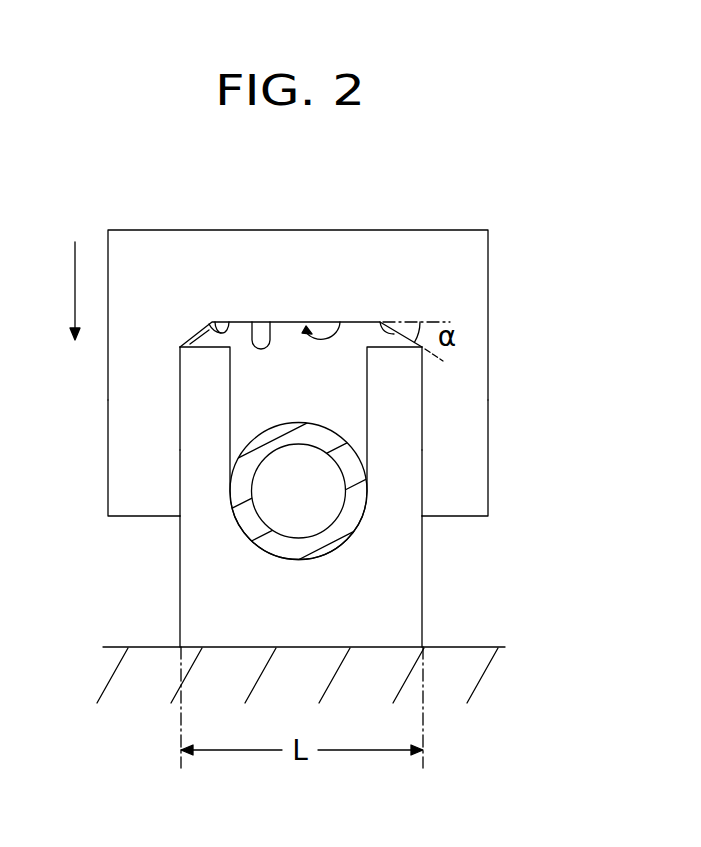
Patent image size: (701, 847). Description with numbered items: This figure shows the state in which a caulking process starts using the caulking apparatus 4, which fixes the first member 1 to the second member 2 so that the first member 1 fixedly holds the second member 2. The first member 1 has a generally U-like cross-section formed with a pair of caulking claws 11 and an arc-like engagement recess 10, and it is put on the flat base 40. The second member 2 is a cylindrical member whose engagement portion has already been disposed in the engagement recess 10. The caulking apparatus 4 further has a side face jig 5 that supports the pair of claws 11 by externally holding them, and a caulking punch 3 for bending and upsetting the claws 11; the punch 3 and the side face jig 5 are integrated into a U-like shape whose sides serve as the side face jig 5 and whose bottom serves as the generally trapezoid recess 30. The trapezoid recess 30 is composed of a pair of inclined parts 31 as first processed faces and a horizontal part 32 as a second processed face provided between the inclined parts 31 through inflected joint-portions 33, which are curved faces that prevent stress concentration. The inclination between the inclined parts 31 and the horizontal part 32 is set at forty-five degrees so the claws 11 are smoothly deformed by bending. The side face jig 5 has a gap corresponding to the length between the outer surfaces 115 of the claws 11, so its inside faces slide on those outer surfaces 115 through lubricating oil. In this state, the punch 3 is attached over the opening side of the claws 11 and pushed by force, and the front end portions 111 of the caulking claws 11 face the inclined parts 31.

The first member 1 is at (423, 582).
The second member 2 is at (234, 512).
The caulking punch 3 is at (160, 245).
The caulking apparatus 4 is at (314, 272).
The side face jig 5 is at (147, 442).
The engagement recess 10 is at (282, 552).
The caulking claws 11 is at (203, 386).
The trapezoid recess 30 is at (340, 322).
The inclined parts 31 is at (192, 333).
The horizontal part 32 is at (270, 325).
The inflected joint-portions 33 is at (228, 328).
The base 40 is at (457, 667).
The front end portions 111 is at (205, 337).
The outer surfaces 115 is at (180, 481).